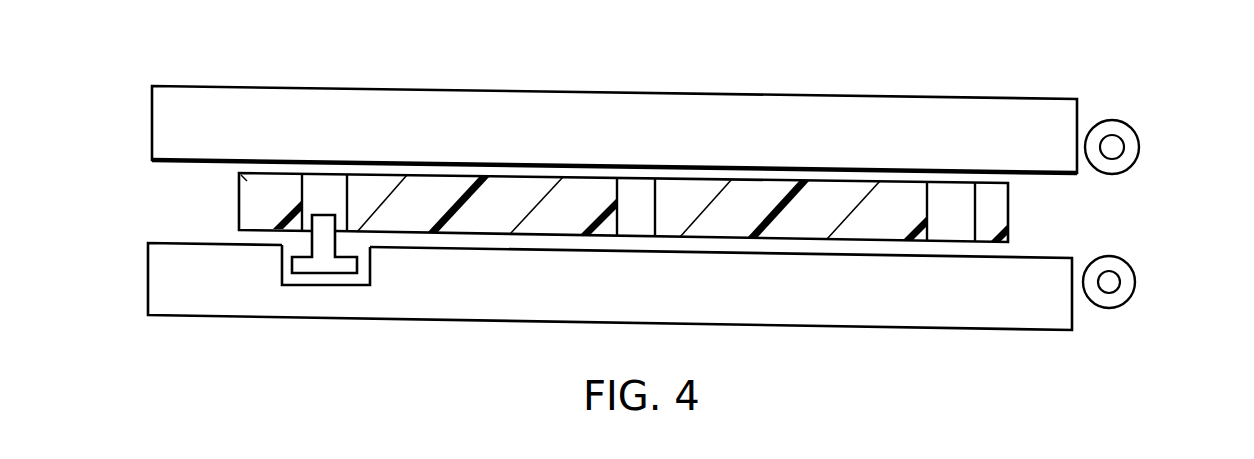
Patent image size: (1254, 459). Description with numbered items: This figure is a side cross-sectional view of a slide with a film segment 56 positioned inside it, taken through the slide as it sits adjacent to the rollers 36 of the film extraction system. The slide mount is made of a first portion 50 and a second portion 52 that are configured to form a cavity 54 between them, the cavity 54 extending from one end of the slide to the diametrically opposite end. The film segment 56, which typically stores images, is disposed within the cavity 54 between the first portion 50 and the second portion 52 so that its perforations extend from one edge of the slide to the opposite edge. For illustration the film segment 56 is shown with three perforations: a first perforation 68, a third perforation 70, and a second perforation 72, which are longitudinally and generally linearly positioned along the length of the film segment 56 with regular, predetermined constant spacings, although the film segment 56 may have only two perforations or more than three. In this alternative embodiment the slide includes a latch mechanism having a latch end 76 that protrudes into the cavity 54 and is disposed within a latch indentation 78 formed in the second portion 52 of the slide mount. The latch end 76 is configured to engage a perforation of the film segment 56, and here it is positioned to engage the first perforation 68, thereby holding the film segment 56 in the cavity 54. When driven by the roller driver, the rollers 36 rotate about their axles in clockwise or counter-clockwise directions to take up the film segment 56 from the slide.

The roller 36 is at (1139, 145).
The first portion 50 is at (163, 115).
The second portion 52 is at (162, 287).
The cavity 54 is at (158, 200).
The film segment 56 is at (257, 215).
The first perforation 68 is at (323, 187).
The third perforation 70 is at (632, 195).
The second perforation 72 is at (950, 202).
The latch end 76 is at (322, 257).
The latch indentation 78 is at (362, 277).